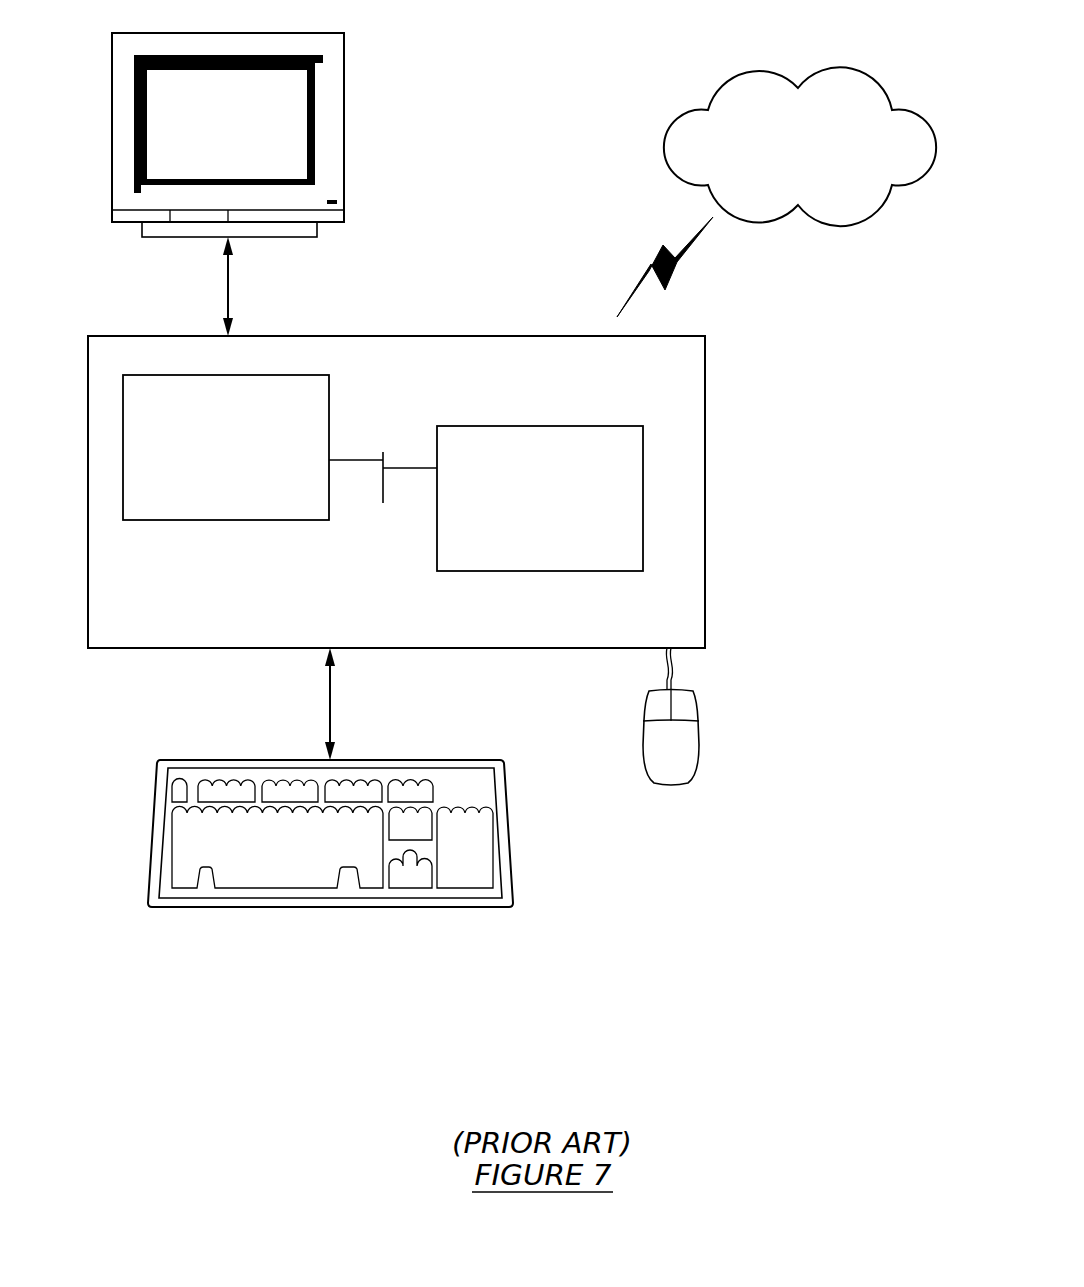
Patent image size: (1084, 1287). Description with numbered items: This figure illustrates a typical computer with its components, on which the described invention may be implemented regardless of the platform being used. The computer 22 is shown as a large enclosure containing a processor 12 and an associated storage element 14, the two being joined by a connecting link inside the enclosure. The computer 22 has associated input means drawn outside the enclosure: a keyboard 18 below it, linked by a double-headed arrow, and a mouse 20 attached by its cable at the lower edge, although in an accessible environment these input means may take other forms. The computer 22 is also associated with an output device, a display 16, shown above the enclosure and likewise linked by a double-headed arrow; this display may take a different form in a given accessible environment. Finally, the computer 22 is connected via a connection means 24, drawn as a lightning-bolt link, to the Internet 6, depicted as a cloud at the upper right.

The Internet 6 is at (768, 68).
The processor 12 is at (212, 461).
The storage element 14 is at (525, 512).
The display 16 is at (212, 148).
The keyboard 18 is at (288, 856).
The mouse 20 is at (688, 772).
The computer 22 is at (705, 535).
The connection means 24 is at (638, 248).